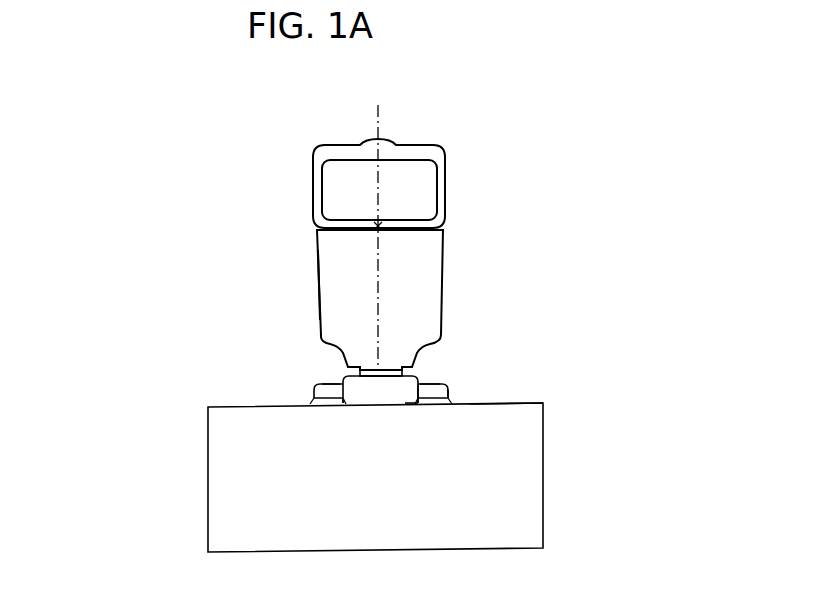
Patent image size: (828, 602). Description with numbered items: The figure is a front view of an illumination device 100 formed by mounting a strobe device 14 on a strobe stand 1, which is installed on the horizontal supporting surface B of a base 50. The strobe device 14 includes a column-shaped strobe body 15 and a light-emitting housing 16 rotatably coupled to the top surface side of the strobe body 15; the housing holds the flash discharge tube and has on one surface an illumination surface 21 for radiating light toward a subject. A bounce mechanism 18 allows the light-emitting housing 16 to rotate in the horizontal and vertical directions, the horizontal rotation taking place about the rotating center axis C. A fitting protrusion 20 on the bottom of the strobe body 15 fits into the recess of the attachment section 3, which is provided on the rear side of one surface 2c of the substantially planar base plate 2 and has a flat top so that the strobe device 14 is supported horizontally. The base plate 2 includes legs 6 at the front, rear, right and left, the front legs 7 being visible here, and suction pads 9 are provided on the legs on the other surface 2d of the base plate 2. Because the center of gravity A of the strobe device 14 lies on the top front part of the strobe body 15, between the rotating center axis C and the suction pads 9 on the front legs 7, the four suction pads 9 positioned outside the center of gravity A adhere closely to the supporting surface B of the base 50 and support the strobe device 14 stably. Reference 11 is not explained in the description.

The illumination device 100 is at (100, 122).
The rotating center axis C is at (380, 113).
The bounce mechanism 18 is at (450, 225).
The light-emitting housing 16 is at (313, 190).
The illumination surface 21 is at (423, 188).
The center of gravity A is at (381, 227).
The strobe device 14 is at (448, 282).
The strobe body 15 is at (318, 280).
The attachment section 3 is at (408, 372).
The fitting protrusion 20 is at (368, 378).
The base plate 2 is at (388, 389).
The one surface 2c is at (440, 379).
The other surface 2d is at (403, 399).
The legs 6 is at (318, 390).
The front legs 7 is at (325, 385).
The strobe stand 1 is at (455, 388).
The suction pads 9 is at (313, 408).
The bonding portion 11 is at (324, 407).
The base 50 is at (548, 475).
The supporting surface B is at (528, 403).